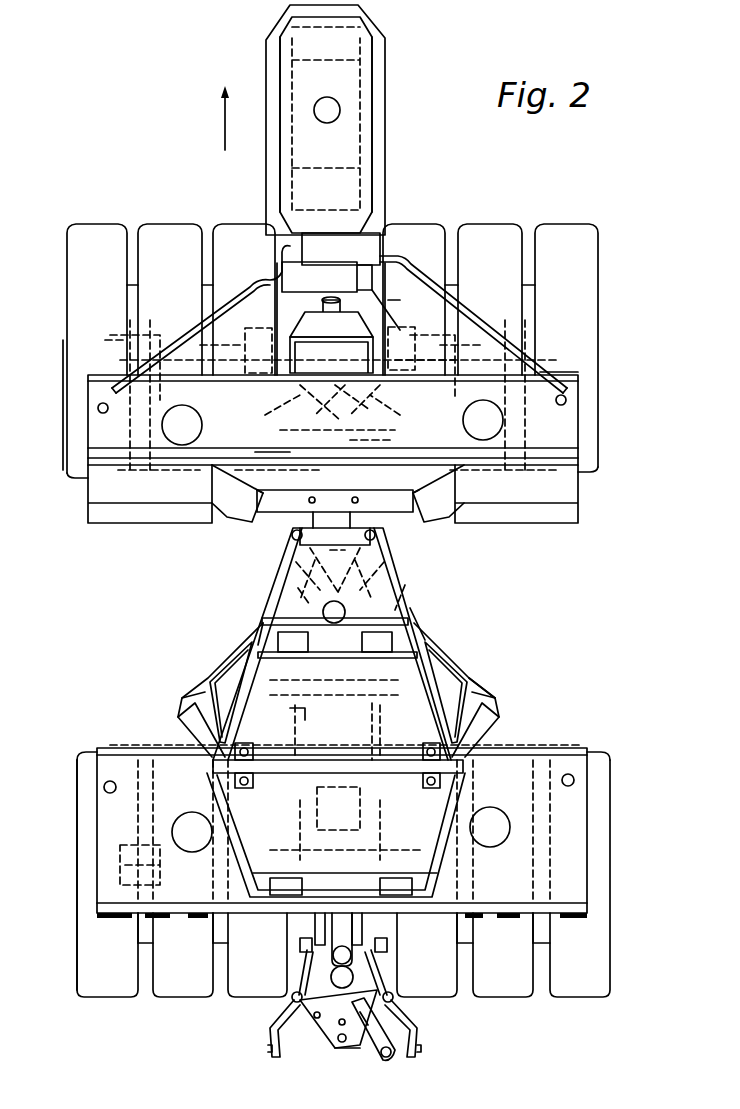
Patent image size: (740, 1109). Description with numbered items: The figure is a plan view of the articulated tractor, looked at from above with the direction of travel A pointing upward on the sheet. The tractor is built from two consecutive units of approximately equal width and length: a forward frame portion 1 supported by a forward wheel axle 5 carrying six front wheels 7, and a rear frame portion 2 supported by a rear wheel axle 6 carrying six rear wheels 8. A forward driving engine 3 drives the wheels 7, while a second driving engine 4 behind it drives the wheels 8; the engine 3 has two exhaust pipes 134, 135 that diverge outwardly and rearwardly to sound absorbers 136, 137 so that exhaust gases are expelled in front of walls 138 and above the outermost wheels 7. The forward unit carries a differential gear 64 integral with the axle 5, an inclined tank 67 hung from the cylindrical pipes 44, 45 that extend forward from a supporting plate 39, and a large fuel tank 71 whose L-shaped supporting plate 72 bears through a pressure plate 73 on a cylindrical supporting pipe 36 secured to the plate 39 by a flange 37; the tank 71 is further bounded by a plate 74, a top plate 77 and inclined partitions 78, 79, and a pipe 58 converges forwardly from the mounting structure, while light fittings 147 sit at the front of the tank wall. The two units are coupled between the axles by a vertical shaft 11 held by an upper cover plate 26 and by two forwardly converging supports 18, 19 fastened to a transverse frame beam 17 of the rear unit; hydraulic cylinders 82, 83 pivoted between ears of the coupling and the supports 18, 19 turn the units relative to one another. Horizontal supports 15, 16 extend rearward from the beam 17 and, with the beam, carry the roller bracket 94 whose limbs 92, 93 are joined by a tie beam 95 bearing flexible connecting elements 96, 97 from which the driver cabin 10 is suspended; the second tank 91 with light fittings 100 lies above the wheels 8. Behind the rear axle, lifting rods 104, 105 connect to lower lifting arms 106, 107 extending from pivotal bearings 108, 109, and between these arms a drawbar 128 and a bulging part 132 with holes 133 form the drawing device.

The direction of travel A is at (222, 125).
The forward frame portion 1 is at (62, 339).
The rear frame portion 2 is at (66, 780).
The driving engine 3 is at (349, 96).
The driving engine 4 is at (302, 588).
The forward wheel axle 5 is at (104, 340).
The rear wheel axle 6 is at (120, 873).
The front wheels 7 is at (115, 230).
The rear wheels 8 is at (447, 978).
The driver cabin 10 is at (436, 642).
The vertical shaft 11 is at (386, 562).
The horizontal support 15 is at (373, 718).
The horizontal support 16 is at (300, 706).
The frame beam 17 is at (483, 694).
The support 18 is at (406, 586).
The support 19 is at (295, 562).
The upper cover plate 26 is at (350, 490).
The cylindrical supporting pipe 36 is at (320, 472).
The flange 37 is at (384, 441).
The supporting plate 39 is at (300, 388).
The cylindrical pipe 44 is at (275, 396).
The cylindrical pipe 45 is at (390, 392).
The pipe 58 is at (378, 300).
The differential gear 64 is at (300, 326).
The tank 67 is at (344, 363).
The fuel tank 71 is at (104, 433).
The supporting plate 72 is at (268, 455).
The pressure plate 73 is at (280, 513).
The plate 74 is at (125, 525).
The top plate 77 is at (105, 448).
The partition 78 is at (228, 522).
The partition 79 is at (418, 522).
The hydraulic cylinder 82 is at (264, 610).
The hydraulic cylinder 83 is at (408, 611).
The second tank 91 is at (116, 820).
The limb 92 is at (178, 712).
The limb 93 is at (500, 711).
The roller bracket 94 is at (279, 775).
The tie beam 95 is at (347, 742).
The flexible connecting element 96 is at (242, 744).
The flexible connecting element 97 is at (400, 800).
The light fittings 100 is at (198, 920).
The lifting rod 104 is at (300, 968).
The lifting rod 105 is at (380, 968).
The lower lifting arm 106 is at (272, 1027).
The lower lifting arm 107 is at (417, 1036).
The pivotal bearing 108 is at (298, 943).
The pivotal bearing 109 is at (389, 943).
The drawbar 128 is at (337, 1054).
The bulging part 132 is at (323, 1036).
The holes 133 is at (342, 1050).
The exhaust pipe 134 is at (244, 296).
The exhaust pipe 135 is at (456, 303).
The sound absorber 136 is at (322, 272).
The sound absorber 137 is at (325, 233).
The walls 138 is at (336, 626).
The light fittings 147 is at (560, 368).